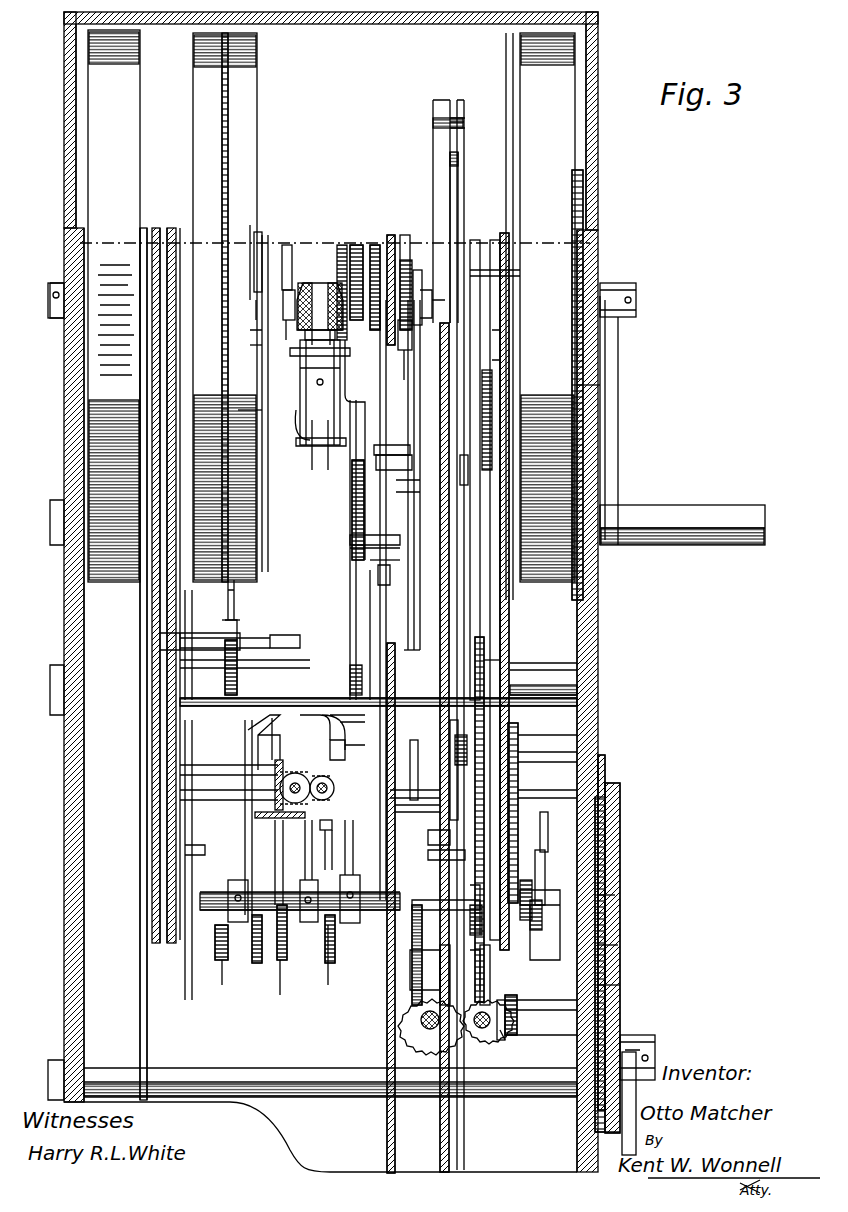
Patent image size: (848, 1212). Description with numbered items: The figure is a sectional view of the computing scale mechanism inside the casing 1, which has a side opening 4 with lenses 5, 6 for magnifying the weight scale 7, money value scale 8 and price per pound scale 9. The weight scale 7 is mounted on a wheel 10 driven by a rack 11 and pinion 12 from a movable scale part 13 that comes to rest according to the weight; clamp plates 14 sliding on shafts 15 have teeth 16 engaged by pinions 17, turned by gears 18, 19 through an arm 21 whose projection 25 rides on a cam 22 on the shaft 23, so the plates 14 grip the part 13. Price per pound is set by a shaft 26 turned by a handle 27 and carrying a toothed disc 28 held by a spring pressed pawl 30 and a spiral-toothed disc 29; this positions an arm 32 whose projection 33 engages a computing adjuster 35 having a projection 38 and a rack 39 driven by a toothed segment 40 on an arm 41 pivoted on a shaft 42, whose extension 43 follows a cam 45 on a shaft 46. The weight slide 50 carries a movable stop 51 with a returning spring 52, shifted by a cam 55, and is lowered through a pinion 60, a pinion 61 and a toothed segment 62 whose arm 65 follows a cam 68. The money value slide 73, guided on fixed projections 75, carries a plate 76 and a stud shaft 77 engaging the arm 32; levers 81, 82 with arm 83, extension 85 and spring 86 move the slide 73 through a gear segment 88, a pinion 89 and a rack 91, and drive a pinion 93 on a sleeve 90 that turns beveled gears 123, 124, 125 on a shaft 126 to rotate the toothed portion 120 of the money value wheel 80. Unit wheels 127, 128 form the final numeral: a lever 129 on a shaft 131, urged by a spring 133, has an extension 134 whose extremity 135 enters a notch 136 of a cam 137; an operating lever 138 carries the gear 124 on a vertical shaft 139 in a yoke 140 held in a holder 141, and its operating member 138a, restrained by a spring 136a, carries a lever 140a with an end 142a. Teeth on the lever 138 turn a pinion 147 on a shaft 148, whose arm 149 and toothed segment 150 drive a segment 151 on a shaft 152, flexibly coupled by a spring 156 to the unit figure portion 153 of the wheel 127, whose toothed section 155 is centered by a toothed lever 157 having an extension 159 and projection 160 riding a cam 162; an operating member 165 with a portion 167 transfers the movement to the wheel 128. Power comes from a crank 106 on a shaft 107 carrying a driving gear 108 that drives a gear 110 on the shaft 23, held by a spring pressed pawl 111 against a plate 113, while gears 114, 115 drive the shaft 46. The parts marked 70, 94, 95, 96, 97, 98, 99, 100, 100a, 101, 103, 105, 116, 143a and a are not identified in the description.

The casing 1 is at (64, 222).
The side opening 4 is at (395, 1172).
The lens 5 is at (430, 1172).
The lens 6 is at (510, 1140).
The weight indicating scale 7 is at (108, 578).
The money value scale 8 is at (238, 614).
The price per pound scale 9 is at (552, 580).
The wheel 10 is at (80, 135).
The rack 11 is at (146, 240).
The pinion 12 is at (150, 255).
The movable scale part 13 is at (458, 830).
The clamp plates 14 is at (440, 940).
The shafts 15 is at (550, 975).
The teeth 16 is at (418, 995).
The pinions 17 is at (427, 1040).
The gear 18 is at (505, 1035).
The gear 19 is at (505, 1042).
The arm 21 is at (518, 1010).
The cam 22 is at (551, 831).
The shaft 23 is at (532, 888).
The projection 25 is at (542, 862).
The shaft 26 is at (636, 302).
The handle or crank 27 is at (612, 503).
The disc 28 is at (583, 204).
The disc 29 is at (577, 385).
The spring pressed pawl 30 is at (605, 460).
The arm 32 is at (450, 142).
The projection 33 is at (455, 105).
The computing adjuster 35 is at (494, 148).
The adjuster projection 38 is at (496, 310).
The rack 39 is at (494, 378).
The toothed segment 40 is at (495, 405).
The arm 41 is at (492, 488).
The shaft 42 is at (524, 672).
The extension 43 is at (518, 718).
The cam 45 is at (547, 753).
The shaft 46 is at (535, 798).
The weight slide 50 is at (465, 225).
The movable stop 51 is at (452, 758).
The returning spring 52 is at (455, 742).
The cam 55 is at (440, 865).
The pinion 60 is at (448, 650).
The pinion 61 is at (488, 665).
The toothed segment 62 is at (480, 640).
The arm 65 is at (470, 930).
The cam 68 is at (440, 880).
The rod 70 is at (495, 310).
The money value slide 73 is at (404, 260).
The fixed projections 75 is at (393, 240).
The plate 76 is at (432, 300).
The stud shaft 77 is at (417, 335).
The money value wheel 80 is at (256, 118).
The lever 81 is at (404, 392).
The lever 82 is at (415, 489).
The arm 83 is at (406, 460).
The extension 85 is at (358, 578).
The spring 86 is at (419, 612).
The gear segment 88 is at (419, 365).
The pinion 89 is at (417, 272).
The sleeve 90 is at (333, 342).
The rack 91 is at (376, 248).
The pinion 93 is at (320, 393).
The rod 94 is at (420, 742).
The bar 95 is at (392, 808).
The bar 96 is at (395, 790).
The pipe 97 is at (312, 722).
The bracket 98 is at (300, 742).
The gears 99 is at (294, 795).
The shaft 100 is at (275, 780).
The block 100a is at (344, 860).
The block 101 is at (275, 855).
The toothed wheel 103 is at (280, 832).
The rod 105 is at (328, 962).
The crank or handle 106 is at (630, 1052).
The shaft 107 is at (655, 1050).
The driving gear 108 is at (620, 1000).
The gear 110 is at (620, 835).
The spring pressed pawl 111 is at (606, 768).
The plate 113 is at (620, 892).
The gear 114 is at (547, 916).
The gear 115 is at (547, 737).
The pin 116 is at (620, 946).
The toothed portion 120 is at (230, 152).
The beveled gear 123 is at (340, 250).
The beveled gear 124 is at (320, 311).
The beveled gear 125 is at (294, 259).
The shaft 126 is at (48, 305).
The unit wheel 127 is at (266, 232).
The unit wheel 128 is at (178, 268).
The lever 129 is at (241, 611).
The shaft 131 is at (240, 645).
The spring 133 is at (225, 668).
The extension 134 is at (222, 725).
The extremity 135 is at (215, 940).
The notch 136 is at (215, 892).
The spring 136a is at (350, 676).
The cam 137 is at (222, 962).
The operating lever 138 is at (372, 392).
The operating member 138a is at (356, 748).
The vertical shaft 139 is at (324, 448).
The yoke 140 is at (344, 460).
The lever 140a is at (405, 445).
The holder 141 is at (360, 245).
The extending end 142a is at (352, 540).
The bar 143a is at (355, 548).
The pinion 147 is at (316, 648).
The shaft 148 is at (247, 659).
The arm 149 is at (292, 510).
The toothed segment 150 is at (250, 348).
The segment 151 is at (295, 306).
The shaft 152 is at (295, 286).
The unit figure portion 153 is at (254, 232).
The toothed section 155 is at (252, 365).
The spring 156 is at (262, 240).
The toothed lever 157 is at (290, 608).
The extension 159 is at (245, 848).
The projection 160 is at (258, 408).
The cam 162 is at (262, 965).
The operating member 165 is at (278, 524).
The portion 167 is at (226, 605).
The pin a is at (431, 409).